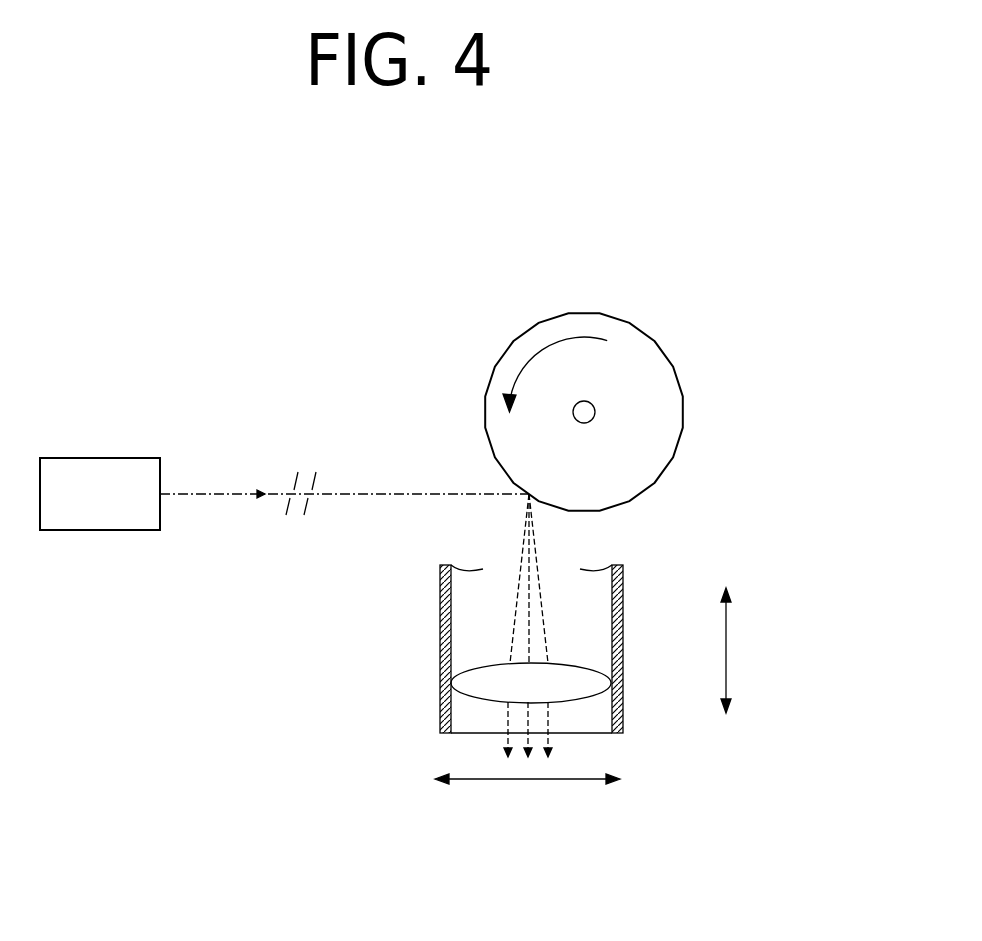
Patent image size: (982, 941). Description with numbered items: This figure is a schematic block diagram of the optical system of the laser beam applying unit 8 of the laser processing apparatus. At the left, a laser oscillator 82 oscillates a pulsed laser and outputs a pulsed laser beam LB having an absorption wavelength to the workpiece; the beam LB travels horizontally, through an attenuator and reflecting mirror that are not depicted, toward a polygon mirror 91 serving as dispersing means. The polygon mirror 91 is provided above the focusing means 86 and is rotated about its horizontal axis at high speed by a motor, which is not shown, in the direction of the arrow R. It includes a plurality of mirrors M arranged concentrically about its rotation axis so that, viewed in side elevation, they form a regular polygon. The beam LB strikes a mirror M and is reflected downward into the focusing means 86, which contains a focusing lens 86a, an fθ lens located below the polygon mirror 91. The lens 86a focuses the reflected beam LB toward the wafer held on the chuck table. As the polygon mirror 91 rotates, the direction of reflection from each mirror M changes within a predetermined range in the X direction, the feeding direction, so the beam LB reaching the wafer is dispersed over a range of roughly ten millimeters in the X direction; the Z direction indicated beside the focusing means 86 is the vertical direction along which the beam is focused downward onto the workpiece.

The laser beam applying unit 8 is at (646, 563).
The laser oscillator 82 is at (113, 458).
The polygon mirror 91 is at (660, 382).
The focusing means 86 is at (623, 622).
The focusing lens 86a is at (603, 681).
The laser beam LB is at (220, 495).
The mirror M is at (527, 493).
The arrow indicating rotation direction R is at (532, 358).
The X direction X is at (527, 796).
The Z direction Z is at (734, 650).